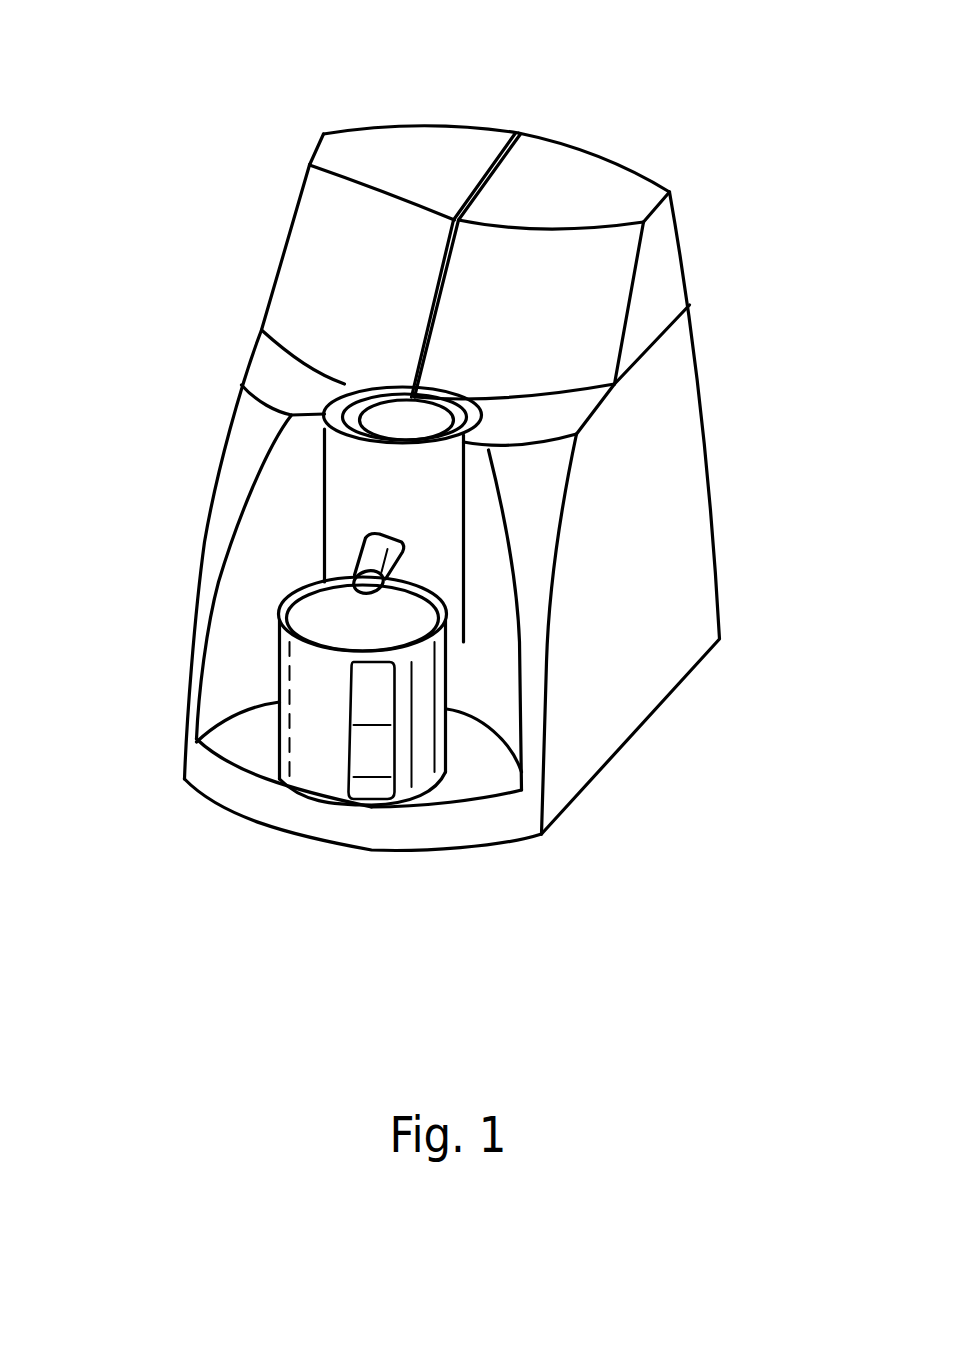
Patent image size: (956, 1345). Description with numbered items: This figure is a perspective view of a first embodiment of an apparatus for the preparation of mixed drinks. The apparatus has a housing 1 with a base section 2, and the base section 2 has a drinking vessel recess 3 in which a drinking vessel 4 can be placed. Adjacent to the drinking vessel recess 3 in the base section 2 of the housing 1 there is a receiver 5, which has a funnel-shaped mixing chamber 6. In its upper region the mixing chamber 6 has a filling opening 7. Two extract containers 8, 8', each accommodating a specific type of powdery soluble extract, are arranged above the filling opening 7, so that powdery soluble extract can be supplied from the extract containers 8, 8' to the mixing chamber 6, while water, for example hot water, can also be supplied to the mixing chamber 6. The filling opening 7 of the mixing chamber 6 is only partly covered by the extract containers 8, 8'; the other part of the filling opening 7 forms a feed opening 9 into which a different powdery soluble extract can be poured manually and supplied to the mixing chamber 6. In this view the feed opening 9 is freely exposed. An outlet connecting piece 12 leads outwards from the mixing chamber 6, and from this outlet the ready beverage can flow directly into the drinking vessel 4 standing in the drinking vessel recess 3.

The housing 1 is at (608, 127).
The base section 2 is at (683, 483).
The drinking vessel recess 3 is at (243, 632).
The drinking vessel 4 is at (322, 763).
The receiver 5 is at (347, 500).
The mixing chamber 6 is at (377, 427).
The filling opening 7 is at (337, 385).
The feed opening 9 is at (340, 400).
The extract container 8 is at (347, 265).
The extract container 8' is at (611, 309).
The outlet connecting piece 12 is at (367, 555).